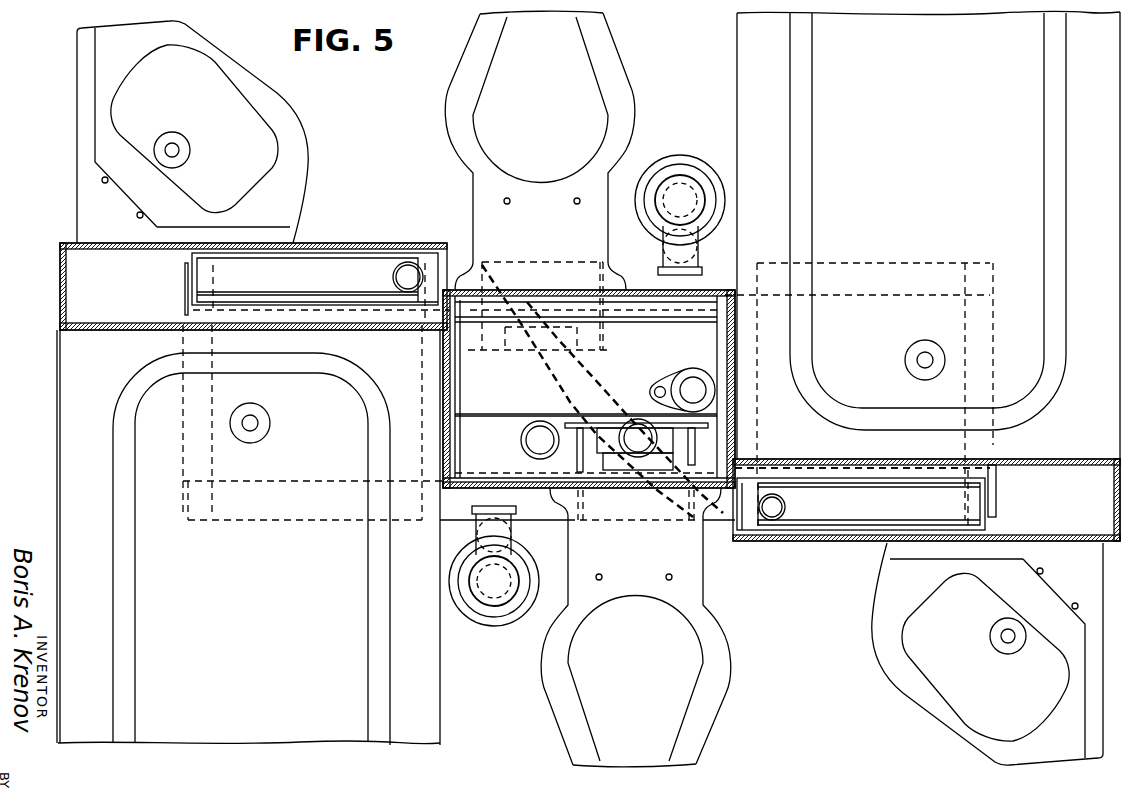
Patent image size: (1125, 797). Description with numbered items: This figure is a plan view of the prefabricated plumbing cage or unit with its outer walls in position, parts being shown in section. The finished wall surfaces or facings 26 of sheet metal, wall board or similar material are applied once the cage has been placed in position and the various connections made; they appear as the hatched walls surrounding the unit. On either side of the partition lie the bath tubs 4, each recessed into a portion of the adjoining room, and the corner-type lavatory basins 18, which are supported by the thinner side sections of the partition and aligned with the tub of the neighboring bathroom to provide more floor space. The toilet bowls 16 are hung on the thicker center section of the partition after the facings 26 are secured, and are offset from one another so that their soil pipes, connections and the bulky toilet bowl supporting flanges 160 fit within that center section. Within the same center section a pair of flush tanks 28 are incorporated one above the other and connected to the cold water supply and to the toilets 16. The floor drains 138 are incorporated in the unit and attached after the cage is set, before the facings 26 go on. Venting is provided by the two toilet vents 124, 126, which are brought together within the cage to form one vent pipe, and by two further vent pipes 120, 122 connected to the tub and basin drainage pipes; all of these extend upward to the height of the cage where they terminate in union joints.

The bath tub 4 is at (745, 55).
The toilet bowl 16 is at (462, 85).
The lavatory basin 18 is at (270, 95).
The facings 26 is at (60, 296).
The flush tank 28 is at (682, 353).
The vent pipe 120 is at (405, 262).
The vent pipe 122 is at (786, 506).
The toilet vent 124 is at (521, 438).
The toilet vent 126 is at (634, 419).
The floor drain 138 is at (689, 157).
The toilet bowl supporting flange 160 is at (576, 421).